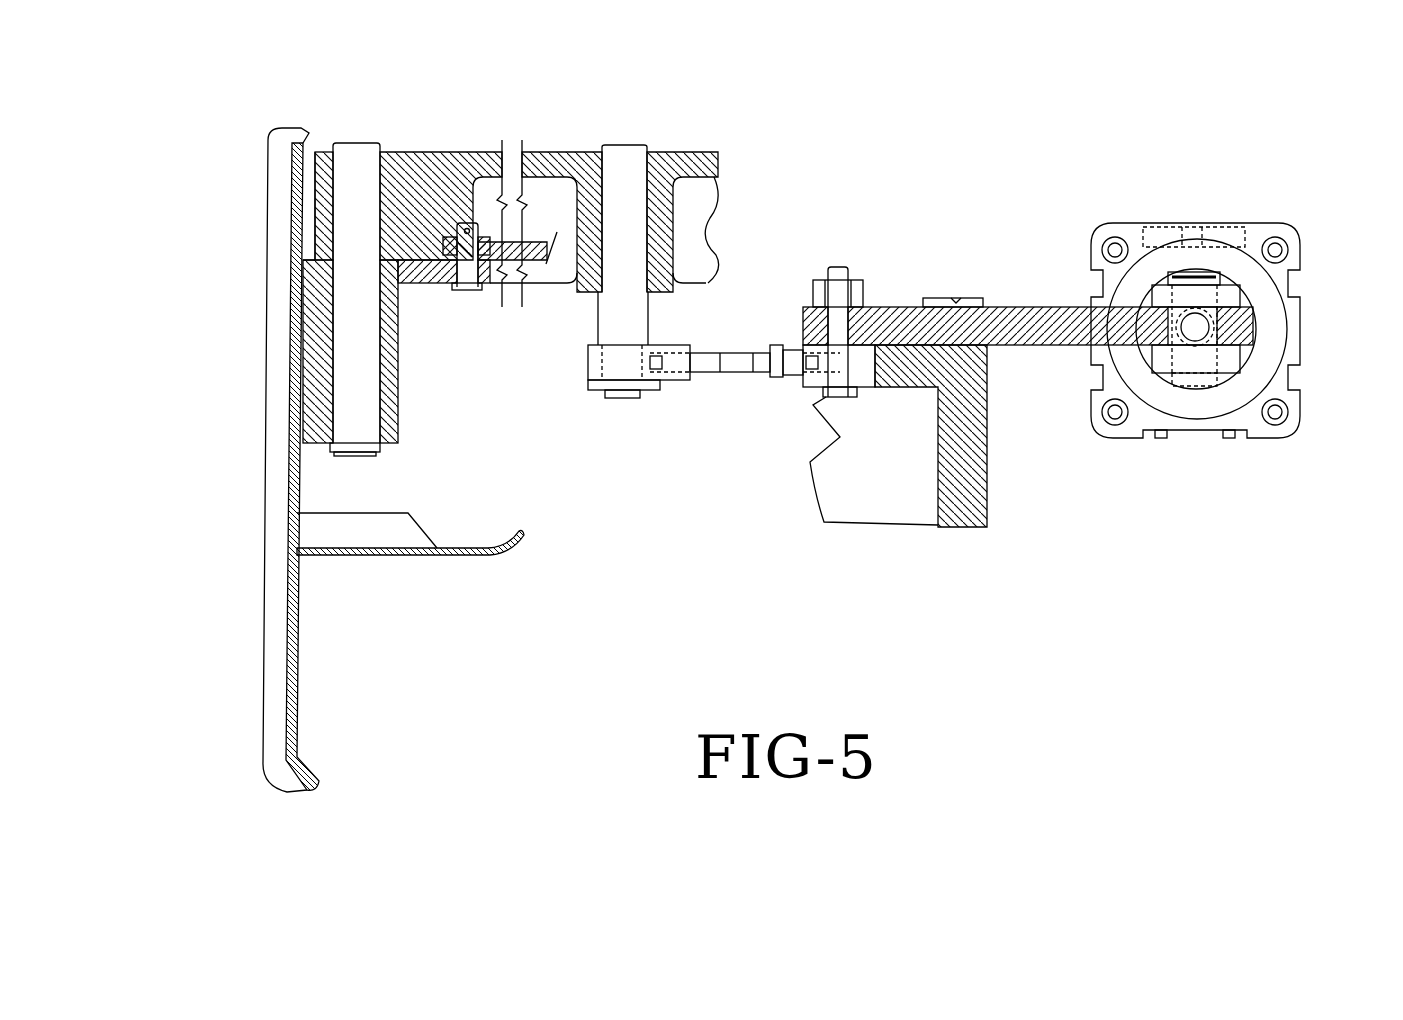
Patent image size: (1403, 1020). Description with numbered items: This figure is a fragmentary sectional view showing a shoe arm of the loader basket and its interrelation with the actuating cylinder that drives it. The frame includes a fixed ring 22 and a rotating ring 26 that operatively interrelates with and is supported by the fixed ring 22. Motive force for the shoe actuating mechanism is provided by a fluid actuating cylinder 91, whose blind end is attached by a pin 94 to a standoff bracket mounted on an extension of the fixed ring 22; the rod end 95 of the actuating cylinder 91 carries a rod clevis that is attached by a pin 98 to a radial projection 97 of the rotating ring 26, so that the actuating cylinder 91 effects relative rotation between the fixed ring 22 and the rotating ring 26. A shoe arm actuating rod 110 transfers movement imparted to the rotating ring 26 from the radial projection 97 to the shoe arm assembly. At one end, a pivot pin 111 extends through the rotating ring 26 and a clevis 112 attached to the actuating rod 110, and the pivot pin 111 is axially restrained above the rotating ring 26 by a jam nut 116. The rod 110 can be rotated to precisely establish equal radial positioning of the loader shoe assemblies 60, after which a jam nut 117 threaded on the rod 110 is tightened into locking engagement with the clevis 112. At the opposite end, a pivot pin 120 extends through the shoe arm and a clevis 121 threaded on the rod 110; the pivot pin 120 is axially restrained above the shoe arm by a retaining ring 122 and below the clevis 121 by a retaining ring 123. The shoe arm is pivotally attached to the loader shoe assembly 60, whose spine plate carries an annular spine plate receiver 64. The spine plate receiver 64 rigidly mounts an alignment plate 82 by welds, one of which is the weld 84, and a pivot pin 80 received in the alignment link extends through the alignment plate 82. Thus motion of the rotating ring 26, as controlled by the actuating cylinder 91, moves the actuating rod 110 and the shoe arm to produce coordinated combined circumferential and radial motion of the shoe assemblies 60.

The fixed ring 22 is at (958, 505).
The rotating ring 26 is at (892, 320).
The loader shoe assembly 60 is at (264, 254).
The spine plate receiver 64 is at (314, 396).
The pivot pin 80 is at (453, 240).
The alignment plate 82 is at (427, 277).
The weld 84 is at (397, 286).
The fluid actuating cylinder 91 is at (1257, 297).
The pin 94 is at (1198, 297).
The rod end 95 is at (1227, 277).
The radial projection 97 is at (1000, 318).
The pin 98 is at (1185, 277).
The shoe arm actuating rod 110 is at (737, 363).
The pivot pin 111 is at (832, 333).
The clevis 112 is at (872, 368).
The jam nut 116 is at (835, 295).
The jam nut 117 is at (777, 377).
The pivot pin 120 is at (628, 213).
The clevis 121 is at (598, 362).
The retaining ring 122 is at (597, 150).
The retaining ring 123 is at (640, 387).